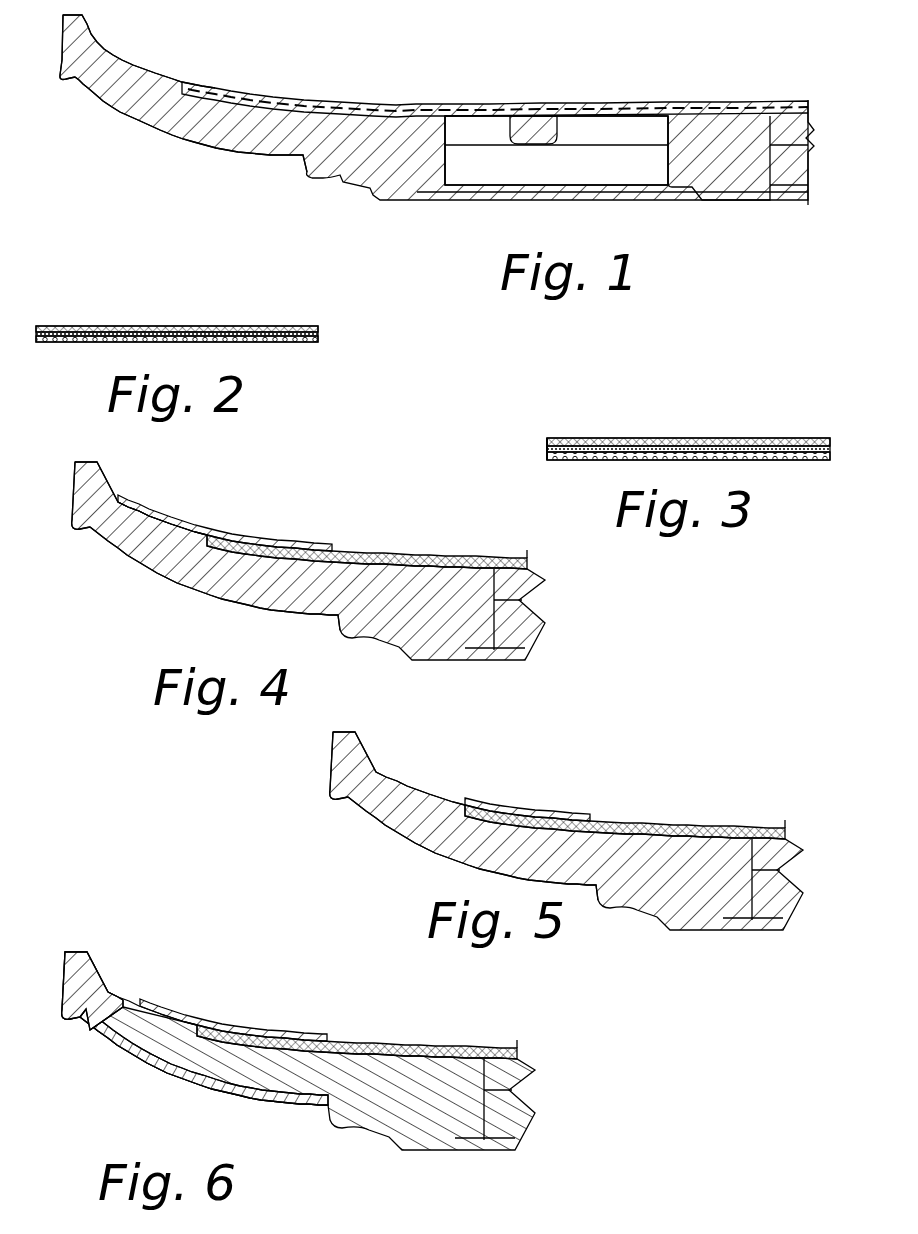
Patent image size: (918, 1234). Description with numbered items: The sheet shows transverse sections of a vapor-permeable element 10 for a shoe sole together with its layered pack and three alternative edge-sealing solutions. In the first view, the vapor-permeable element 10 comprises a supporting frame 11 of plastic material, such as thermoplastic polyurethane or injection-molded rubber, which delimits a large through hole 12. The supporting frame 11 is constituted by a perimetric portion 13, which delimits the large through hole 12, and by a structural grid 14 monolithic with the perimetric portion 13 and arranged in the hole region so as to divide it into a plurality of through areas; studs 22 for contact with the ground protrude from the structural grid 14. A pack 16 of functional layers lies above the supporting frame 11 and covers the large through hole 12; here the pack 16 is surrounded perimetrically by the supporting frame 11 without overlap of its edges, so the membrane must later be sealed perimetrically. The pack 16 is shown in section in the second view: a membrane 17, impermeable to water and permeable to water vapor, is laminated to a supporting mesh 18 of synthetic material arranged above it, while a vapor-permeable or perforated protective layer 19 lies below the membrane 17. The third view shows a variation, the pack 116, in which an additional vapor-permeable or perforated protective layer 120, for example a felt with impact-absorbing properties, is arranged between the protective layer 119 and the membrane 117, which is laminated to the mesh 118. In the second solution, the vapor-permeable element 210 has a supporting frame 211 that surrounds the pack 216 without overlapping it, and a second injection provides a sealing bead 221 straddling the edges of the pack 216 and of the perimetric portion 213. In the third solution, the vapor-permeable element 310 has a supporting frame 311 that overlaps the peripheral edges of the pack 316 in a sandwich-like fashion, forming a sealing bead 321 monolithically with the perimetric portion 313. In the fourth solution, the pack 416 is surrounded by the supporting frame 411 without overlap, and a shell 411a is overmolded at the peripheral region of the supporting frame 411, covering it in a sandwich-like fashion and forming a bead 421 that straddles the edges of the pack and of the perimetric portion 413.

In FIG. 1, the vapor-permeable element 10 is at (162, 163).
In FIG. 1, the supporting frame 11 is at (266, 164).
In FIG. 1, the large through hole 12 is at (618, 150).
In FIG. 1, the perimetric portion 13 is at (125, 97).
In FIG. 1, the structural grid 14 is at (487, 137).
In FIG. 1, the pack of functional layers 16 is at (266, 80).
In FIG. 2, the pack of functional layers 16 is at (211, 312).
In FIG. 2, the membrane 17 is at (320, 333).
In FIG. 2, the mesh 18 is at (243, 326).
In FIG. 2, the protective layer 19 is at (277, 343).
In FIG. 1, the studs 22 is at (722, 187).
In FIG. 3, the pack 116 is at (673, 433).
In FIG. 3, the membrane 117 is at (833, 445).
In FIG. 3, the mesh 118 is at (728, 438).
In FIG. 3, the protective layer 119 is at (780, 460).
In FIG. 3, the additional protective layer 120 is at (547, 450).
In FIG. 4, the vapor-permeable element 210 is at (172, 615).
In FIG. 4, the supporting frame 211 is at (303, 627).
In FIG. 4, the perimetric portion 213 is at (175, 557).
In FIG. 4, the pack 216 is at (377, 540).
In FIG. 4, the sealing bead 221 is at (180, 515).
In FIG. 5, the vapor-permeable element 310 is at (646, 788).
In FIG. 5, the supporting frame 311 is at (625, 918).
In FIG. 5, the perimetric portion 313 is at (400, 823).
In FIG. 5, the pack 316 is at (708, 815).
In FIG. 5, the sealing bead 321 is at (503, 798).
In FIG. 6, the supporting frame 411 is at (387, 1157).
In FIG. 6, the shell 411a is at (85, 1023).
In FIG. 6, the perimetric portion 413 is at (163, 1003).
In FIG. 6, the pack 416 is at (417, 1032).
In FIG. 6, the bead 421 is at (253, 1018).